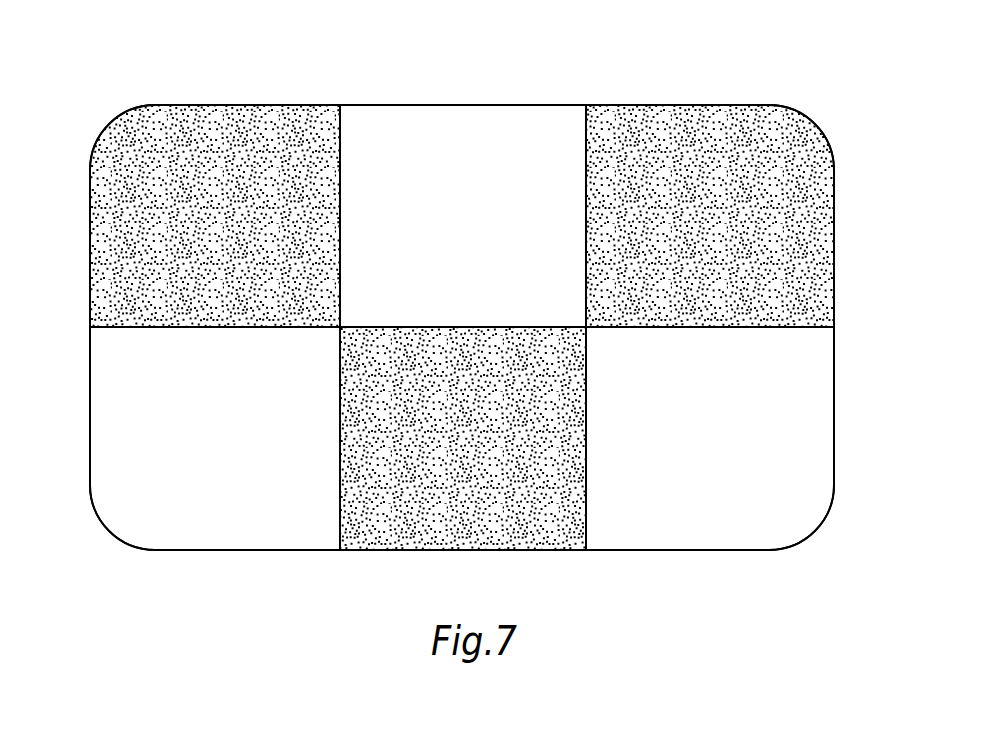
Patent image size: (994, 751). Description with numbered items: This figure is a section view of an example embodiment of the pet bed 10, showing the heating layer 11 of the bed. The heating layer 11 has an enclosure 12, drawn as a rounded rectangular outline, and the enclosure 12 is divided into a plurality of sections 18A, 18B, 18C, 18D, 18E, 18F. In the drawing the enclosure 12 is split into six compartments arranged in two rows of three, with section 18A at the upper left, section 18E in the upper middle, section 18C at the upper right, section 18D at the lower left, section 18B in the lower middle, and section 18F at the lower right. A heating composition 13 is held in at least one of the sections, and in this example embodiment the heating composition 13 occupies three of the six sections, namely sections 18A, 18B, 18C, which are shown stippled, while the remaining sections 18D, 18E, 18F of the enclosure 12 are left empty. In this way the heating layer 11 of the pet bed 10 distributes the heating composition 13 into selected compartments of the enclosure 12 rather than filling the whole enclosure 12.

The pet bed 10 is at (812, 47).
The heating layer 11 is at (822, 347).
The enclosure 12 is at (407, 125).
The heating composition 13 is at (115, 240).
The section 18A is at (220, 123).
The section 18B is at (518, 528).
The section 18C is at (707, 127).
The section 18D is at (219, 530).
The section 18E is at (518, 125).
The section 18F is at (707, 530).